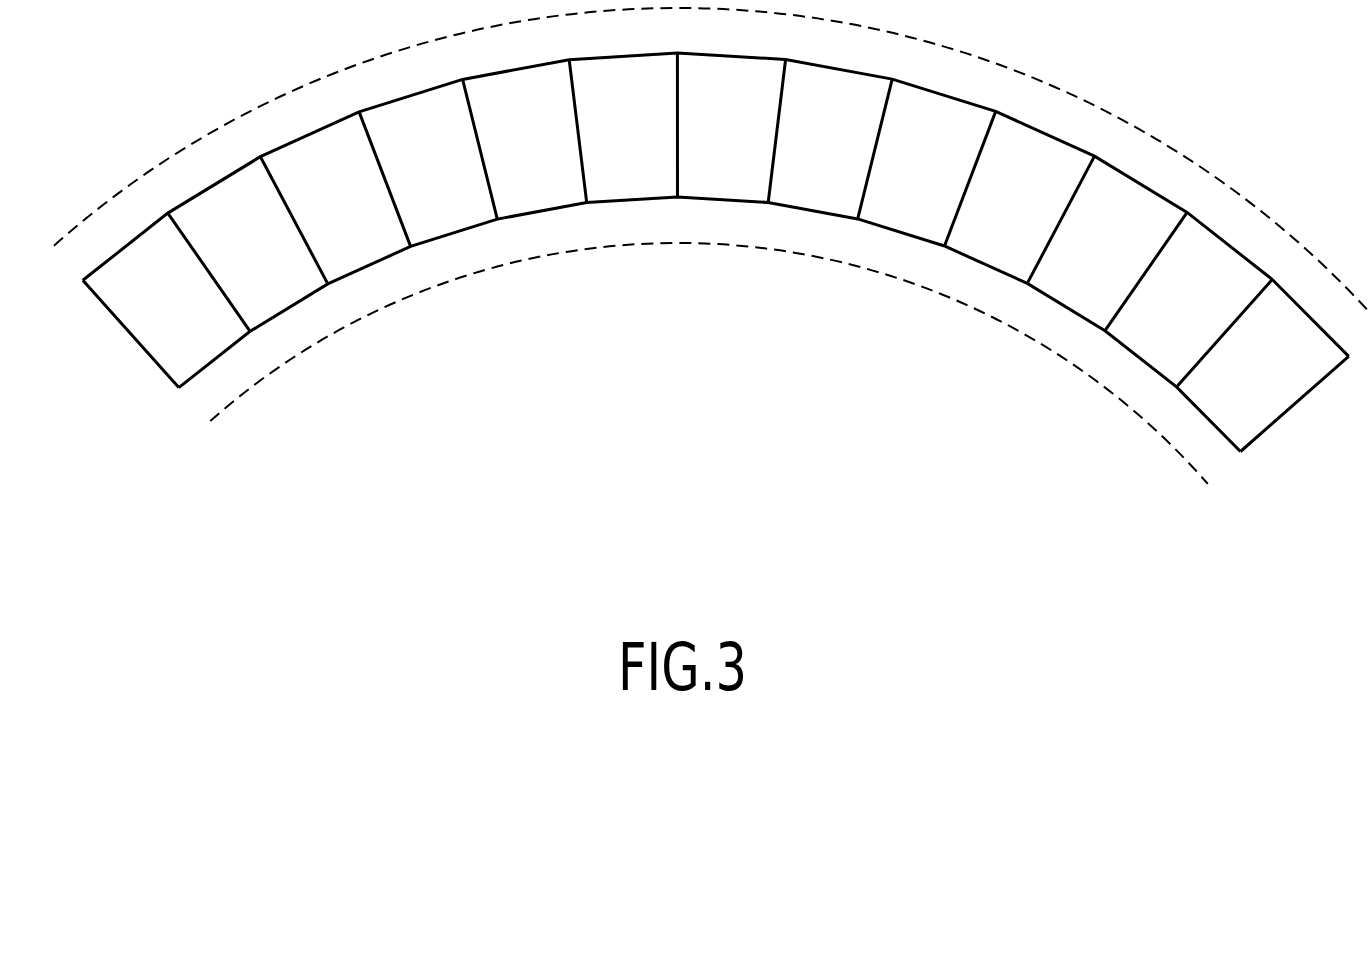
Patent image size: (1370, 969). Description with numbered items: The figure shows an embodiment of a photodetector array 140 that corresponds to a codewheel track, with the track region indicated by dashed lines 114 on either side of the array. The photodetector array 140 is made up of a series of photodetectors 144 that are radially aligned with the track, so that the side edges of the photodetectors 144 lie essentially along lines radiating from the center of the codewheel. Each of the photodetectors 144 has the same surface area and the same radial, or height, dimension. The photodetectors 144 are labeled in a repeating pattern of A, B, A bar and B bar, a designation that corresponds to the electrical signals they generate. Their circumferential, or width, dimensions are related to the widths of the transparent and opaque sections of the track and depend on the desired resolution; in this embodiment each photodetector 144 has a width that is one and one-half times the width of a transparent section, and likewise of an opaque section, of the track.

The circular housing / track 114 is at (1173, 147).
The photodetector array 140 is at (703, 254).
The photodetectors 144 is at (98, 356).